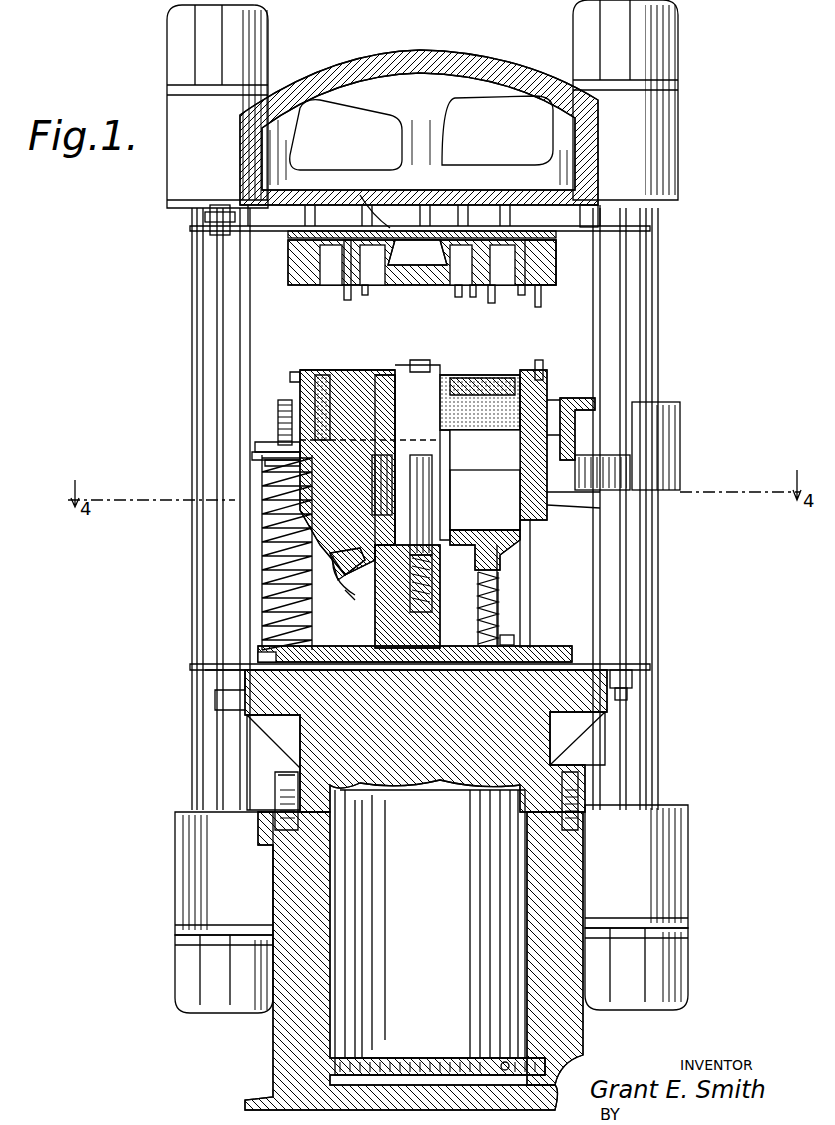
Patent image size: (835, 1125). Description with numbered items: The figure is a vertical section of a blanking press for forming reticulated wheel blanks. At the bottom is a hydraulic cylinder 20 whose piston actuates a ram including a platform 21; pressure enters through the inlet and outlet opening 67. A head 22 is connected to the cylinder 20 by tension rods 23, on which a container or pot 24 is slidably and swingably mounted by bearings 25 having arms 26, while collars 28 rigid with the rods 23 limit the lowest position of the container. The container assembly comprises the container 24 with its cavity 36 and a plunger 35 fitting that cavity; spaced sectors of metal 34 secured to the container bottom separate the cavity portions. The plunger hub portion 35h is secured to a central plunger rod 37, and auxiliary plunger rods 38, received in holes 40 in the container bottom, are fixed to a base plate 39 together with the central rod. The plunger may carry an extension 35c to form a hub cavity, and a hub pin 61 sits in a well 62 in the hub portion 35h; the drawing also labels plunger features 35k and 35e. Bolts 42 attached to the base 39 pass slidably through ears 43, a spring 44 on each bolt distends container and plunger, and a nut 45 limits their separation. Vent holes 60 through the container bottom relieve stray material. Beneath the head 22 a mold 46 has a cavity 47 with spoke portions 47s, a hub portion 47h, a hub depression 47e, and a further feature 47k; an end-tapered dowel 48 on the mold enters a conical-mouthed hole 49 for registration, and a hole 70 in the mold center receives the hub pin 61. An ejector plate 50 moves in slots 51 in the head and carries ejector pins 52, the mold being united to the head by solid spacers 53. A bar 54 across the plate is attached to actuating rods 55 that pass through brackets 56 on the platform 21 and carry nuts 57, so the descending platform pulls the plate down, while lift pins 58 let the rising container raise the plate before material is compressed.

The hydraulic cylinder 20 is at (545, 885).
The platform 21 is at (598, 700).
The head 22 is at (600, 175).
The tension rods 23 is at (660, 370).
The container 24 is at (302, 368).
The bearings 25 is at (680, 412).
The arms 26 is at (562, 398).
The collars 28 is at (630, 470).
The sectors of metal 34 is at (250, 550).
The plunger 35 is at (490, 500).
The extension 35c is at (478, 465).
The hub portion 35h is at (485, 497).
The die flange 35k is at (600, 492).
The die shoulder 35e is at (600, 508).
The container cavity 36 is at (290, 380).
The central plunger rod 37 is at (498, 610).
The auxiliary plunger rods 38 is at (530, 578).
The base plate 39 is at (572, 652).
The holes 40 is at (505, 552).
The bolts 42 is at (275, 435).
The ears 43 is at (252, 458).
The spring 44 is at (265, 464).
The nut 45 is at (255, 447).
The mold 46 is at (558, 268).
The mold cavity 47 is at (492, 303).
The hub portion 47h is at (395, 285).
The hub depression 47e is at (460, 297).
The spoke portions 47s is at (473, 297).
The pin 47k is at (522, 295).
The dowel 48 is at (541, 300).
The conical-mouthed hole 49 is at (541, 365).
The ejector plate 50 is at (285, 235).
The slots 51 is at (200, 215).
The ejector pins 52 is at (550, 255).
The spacers 53 is at (370, 200).
The bar 54 is at (612, 220).
The actuating rods 55 is at (622, 318).
The brackets 56 is at (650, 667).
The nuts 57 is at (632, 688).
The lift pins 58 is at (345, 300).
The vent holes 60 is at (330, 575).
The hub pin 61 is at (432, 500).
The well 62 is at (398, 605).
The inlet opening 67 is at (500, 1060).
The hole 70 is at (420, 268).